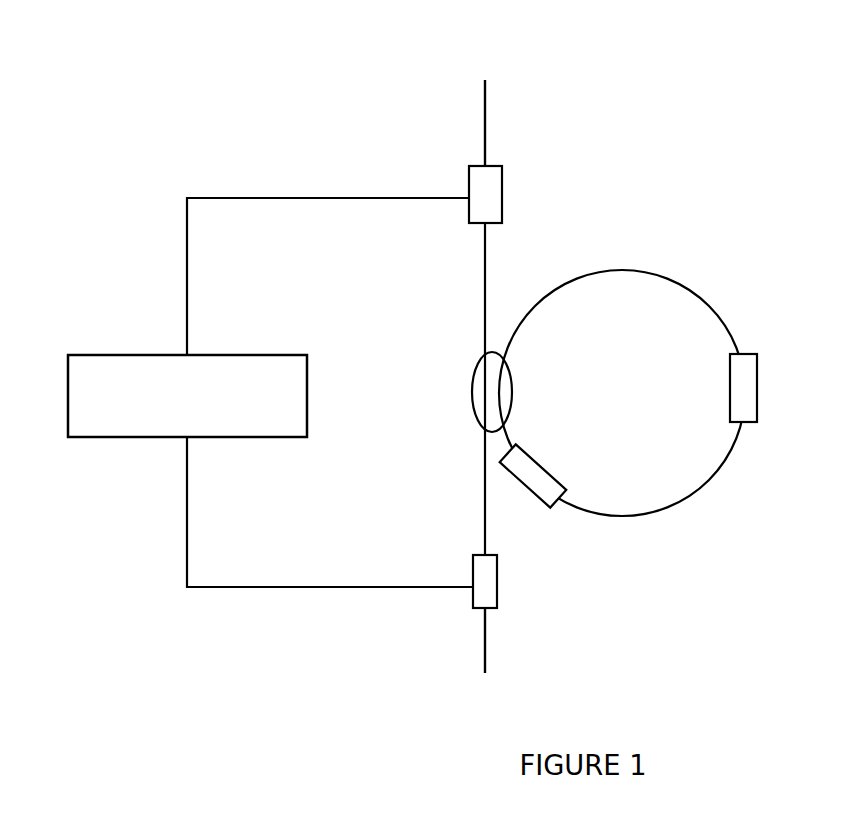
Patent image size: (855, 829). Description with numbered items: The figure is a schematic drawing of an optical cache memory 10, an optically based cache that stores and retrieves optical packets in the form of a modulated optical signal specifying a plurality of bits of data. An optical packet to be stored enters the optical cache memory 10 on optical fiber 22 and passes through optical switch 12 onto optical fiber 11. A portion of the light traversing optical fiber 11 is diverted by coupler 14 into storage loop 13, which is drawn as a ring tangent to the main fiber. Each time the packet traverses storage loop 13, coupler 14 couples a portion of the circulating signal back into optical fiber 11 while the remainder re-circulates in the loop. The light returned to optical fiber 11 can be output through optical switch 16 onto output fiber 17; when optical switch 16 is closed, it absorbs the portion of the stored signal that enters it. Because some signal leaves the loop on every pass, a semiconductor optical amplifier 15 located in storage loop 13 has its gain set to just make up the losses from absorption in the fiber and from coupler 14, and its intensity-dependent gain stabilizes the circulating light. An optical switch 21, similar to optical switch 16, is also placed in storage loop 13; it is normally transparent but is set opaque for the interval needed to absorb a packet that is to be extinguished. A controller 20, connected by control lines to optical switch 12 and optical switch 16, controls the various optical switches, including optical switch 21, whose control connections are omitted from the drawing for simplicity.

The optical cache memory 10 is at (350, 109).
The optical fiber 11 is at (487, 283).
The optical switch 12 is at (503, 203).
The storage loop 13 is at (673, 283).
The coupler 14 is at (470, 395).
The semiconductor optical amplifier 15 is at (748, 398).
The optical switch 16 is at (497, 573).
The output fiber 17 is at (487, 653).
The controller 20 is at (178, 430).
The optical switch 21 is at (533, 480).
The optical fiber 22 is at (485, 120).